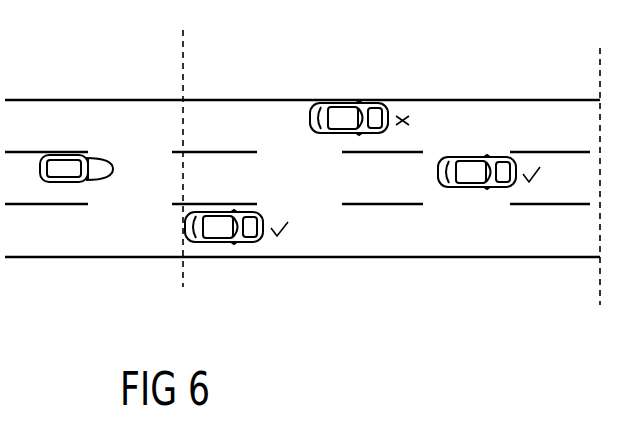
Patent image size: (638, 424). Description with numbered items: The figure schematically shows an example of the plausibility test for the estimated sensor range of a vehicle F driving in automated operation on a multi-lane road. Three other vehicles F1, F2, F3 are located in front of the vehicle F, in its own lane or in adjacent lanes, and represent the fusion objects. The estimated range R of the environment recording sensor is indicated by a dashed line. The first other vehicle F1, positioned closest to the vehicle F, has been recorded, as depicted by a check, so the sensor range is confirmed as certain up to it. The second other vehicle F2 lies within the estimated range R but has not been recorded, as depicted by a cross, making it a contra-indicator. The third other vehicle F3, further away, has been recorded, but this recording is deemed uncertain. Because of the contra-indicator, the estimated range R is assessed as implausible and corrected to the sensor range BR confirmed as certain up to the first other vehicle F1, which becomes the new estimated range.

The vehicle F is at (71, 170).
The first other vehicle F1 is at (219, 238).
The second other vehicle F2 is at (345, 118).
The third other vehicle F3 is at (475, 170).
The sensor range confirmed as certain BR is at (186, 178).
The estimated range R is at (599, 197).